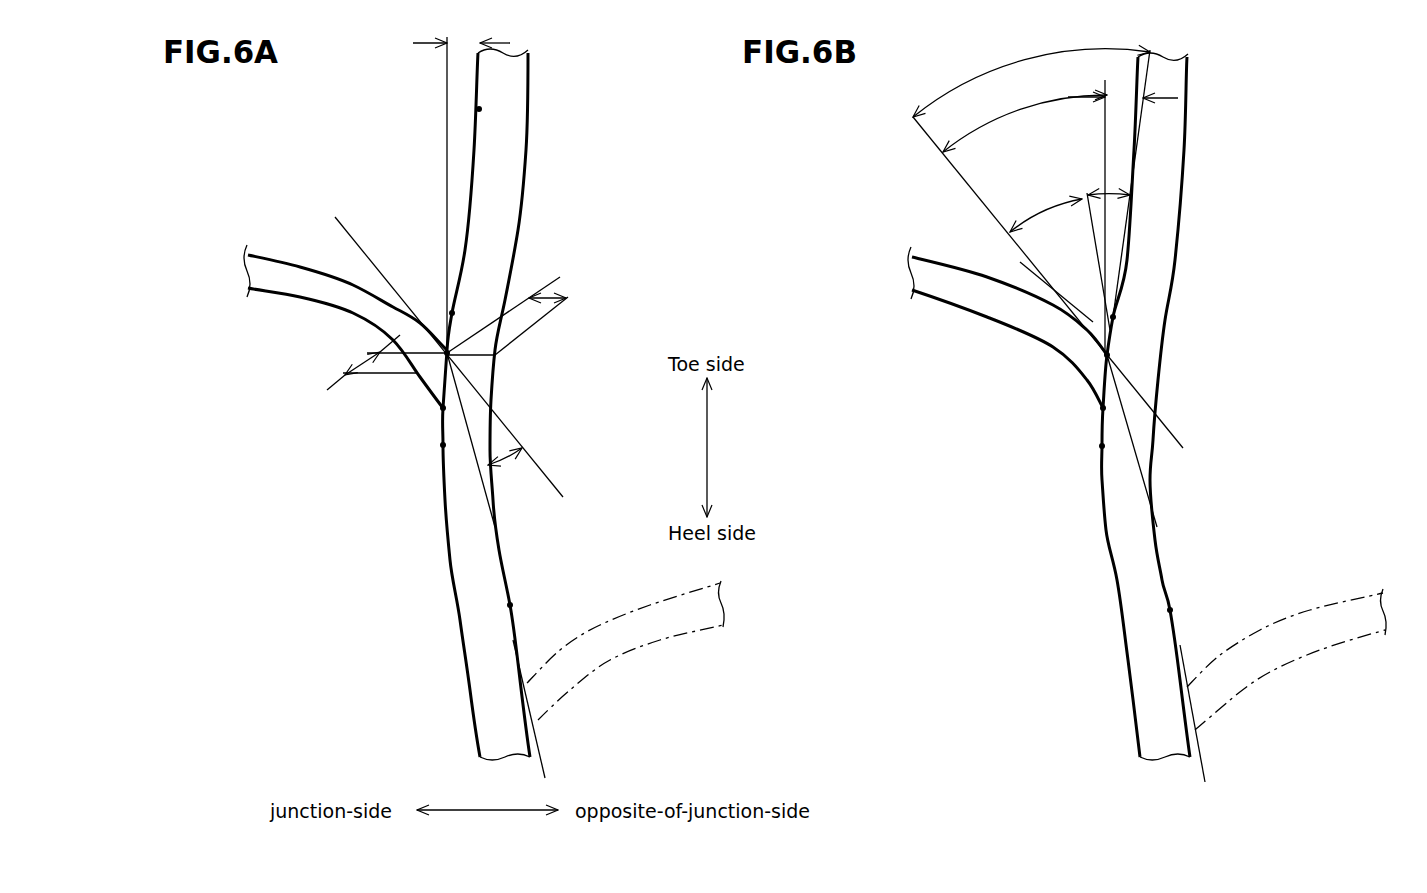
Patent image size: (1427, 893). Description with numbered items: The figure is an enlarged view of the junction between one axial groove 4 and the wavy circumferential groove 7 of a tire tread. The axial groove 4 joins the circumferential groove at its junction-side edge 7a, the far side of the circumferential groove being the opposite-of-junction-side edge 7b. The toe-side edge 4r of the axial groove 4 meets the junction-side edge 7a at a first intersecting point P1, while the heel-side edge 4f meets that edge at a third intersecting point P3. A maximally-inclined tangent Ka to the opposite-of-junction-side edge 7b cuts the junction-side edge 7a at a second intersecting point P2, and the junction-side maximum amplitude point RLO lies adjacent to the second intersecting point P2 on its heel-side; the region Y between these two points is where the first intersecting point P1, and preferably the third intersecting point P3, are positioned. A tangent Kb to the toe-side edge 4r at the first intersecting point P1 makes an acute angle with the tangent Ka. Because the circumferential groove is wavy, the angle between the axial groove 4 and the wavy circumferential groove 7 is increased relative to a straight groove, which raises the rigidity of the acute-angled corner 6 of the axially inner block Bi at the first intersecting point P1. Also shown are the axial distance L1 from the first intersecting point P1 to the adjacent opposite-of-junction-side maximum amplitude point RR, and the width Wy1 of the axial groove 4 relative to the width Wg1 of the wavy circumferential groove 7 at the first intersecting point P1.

In FIG. 6A, the axial groove 4 is at (436, 459).
In FIG. 6B, the axial groove 4 is at (1109, 464).
In FIG. 6A, the toe-side edge of the axial groove 4r is at (297, 265).
In FIG. 6B, the toe-side edge of the axial groove 4r is at (945, 262).
In FIG. 6A, the heel-side edge of the axial groove 4f is at (277, 293).
In FIG. 6B, the acute-angled corner 6 is at (1070, 310).
In FIG. 6A, the wavy circumferential groove 7 is at (518, 404).
In FIG. 6B, the wavy circumferential groove 7 is at (1146, 406).
In FIG. 6A, the junction-side edge 7a is at (472, 183).
In FIG. 6A, the opposite-of-junction-side edge 7b is at (532, 97).
In FIG. 6A, the opposite-of-junction-side maximum amplitude point RR is at (479, 109).
In FIG. 6A, the first intersecting point P1 is at (445, 347).
In FIG. 6B, the first intersecting point P1 is at (1107, 355).
In FIG. 6A, the second intersecting point P2 is at (452, 313).
In FIG. 6B, the second intersecting point P2 is at (1115, 317).
In FIG. 6A, the third intersecting point P3 is at (443, 408).
In FIG. 6B, the third intersecting point P3 is at (1103, 408).
In FIG. 6A, the tangent to the toe-side edge Kb is at (490, 460).
In FIG. 6B, the tangent to the toe-side edge Kb is at (1162, 430).
In FIG. 6A, the maximally-inclined tangent Ka is at (543, 760).
In FIG. 6B, the maximally-inclined tangent Ka is at (1150, 483).
In FIG. 6A, the axial distance L1 is at (461, 29).
In FIG. 6A, the junction-side maximum amplitude point RLO is at (443, 445).
In FIG. 6B, the junction-side maximum amplitude point RLO is at (1102, 447).
In FIG. 6A, the region Y is at (408, 437).
In FIG. 6B, the region Y is at (1058, 448).
In FIG. 6A, the width of the wavy circumferential groove Wg1 is at (548, 290).
In FIG. 6A, the width of the axial groove Wy1 is at (370, 353).
In FIG. 6B, the axially inner block Bi is at (1034, 158).